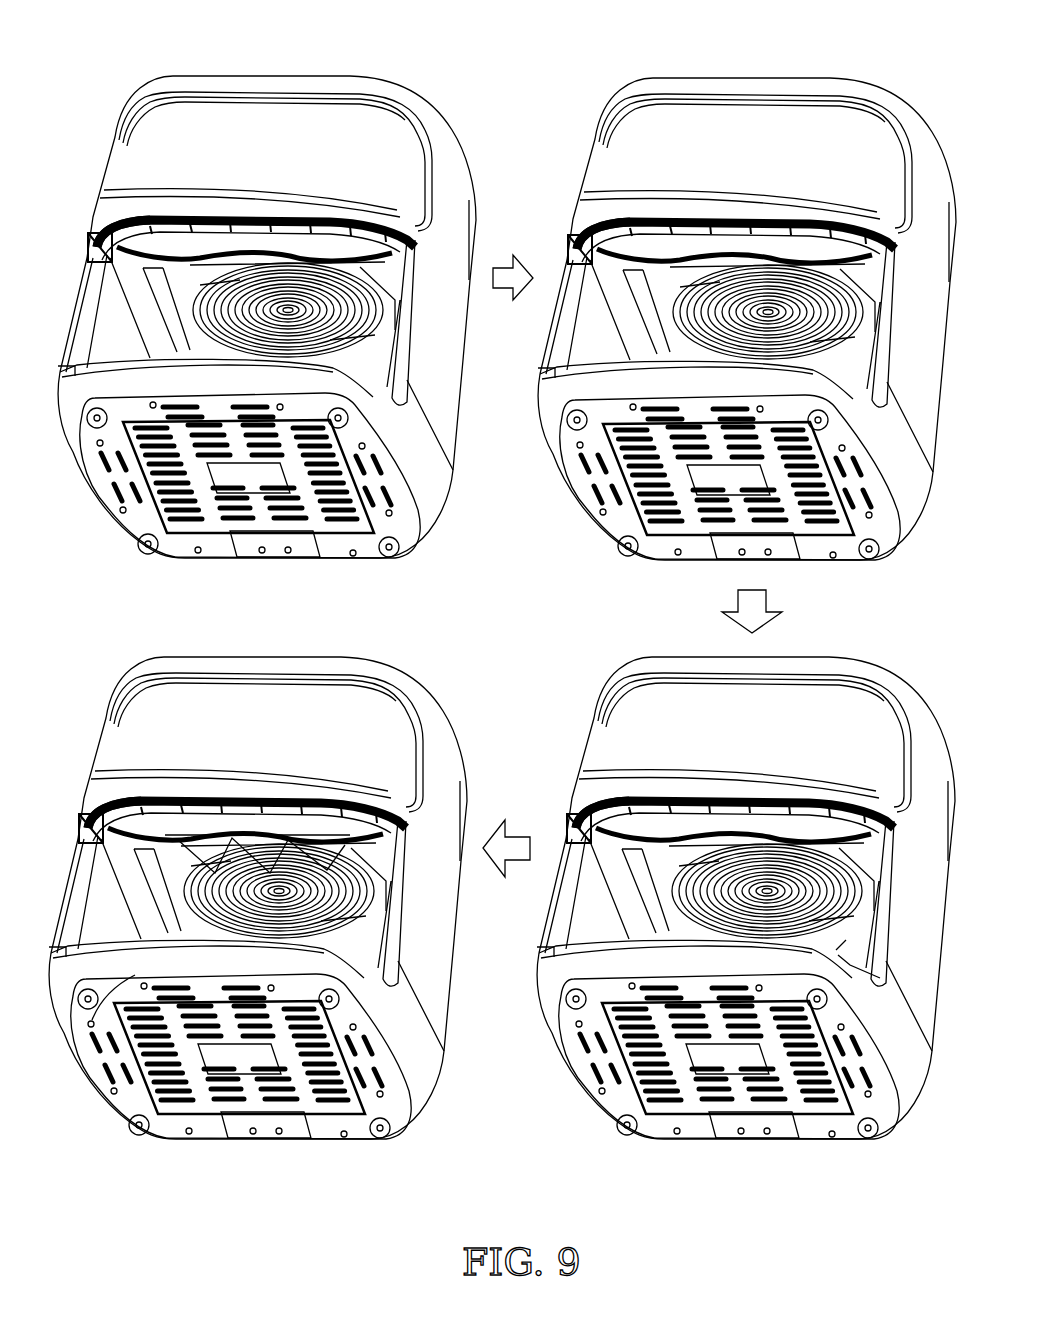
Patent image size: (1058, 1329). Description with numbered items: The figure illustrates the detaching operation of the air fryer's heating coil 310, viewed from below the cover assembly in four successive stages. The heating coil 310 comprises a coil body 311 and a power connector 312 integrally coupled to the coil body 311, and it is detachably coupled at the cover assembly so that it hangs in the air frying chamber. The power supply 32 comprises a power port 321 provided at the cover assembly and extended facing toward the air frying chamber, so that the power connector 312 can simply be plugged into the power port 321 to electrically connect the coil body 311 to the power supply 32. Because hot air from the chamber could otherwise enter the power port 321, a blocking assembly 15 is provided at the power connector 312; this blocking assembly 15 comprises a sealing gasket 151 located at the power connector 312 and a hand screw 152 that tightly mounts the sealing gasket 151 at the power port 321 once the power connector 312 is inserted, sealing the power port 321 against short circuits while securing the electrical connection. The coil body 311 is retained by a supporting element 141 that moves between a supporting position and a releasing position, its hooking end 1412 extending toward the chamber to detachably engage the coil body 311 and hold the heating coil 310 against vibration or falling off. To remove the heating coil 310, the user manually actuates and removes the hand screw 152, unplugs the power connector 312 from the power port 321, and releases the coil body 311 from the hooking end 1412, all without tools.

The blocking assembly 15 is at (79, 124).
The sealing gasket 151 is at (180, 257).
The hand screw 152 is at (110, 217).
The supporting element 141 is at (385, 228).
The hooking end 1412 is at (838, 955).
The heating coil 310 is at (478, 30).
The coil body 311 is at (305, 320).
The power connector 312 is at (74, 1055).
The power supply 32 is at (190, 608).
The power port 321 is at (92, 1020).